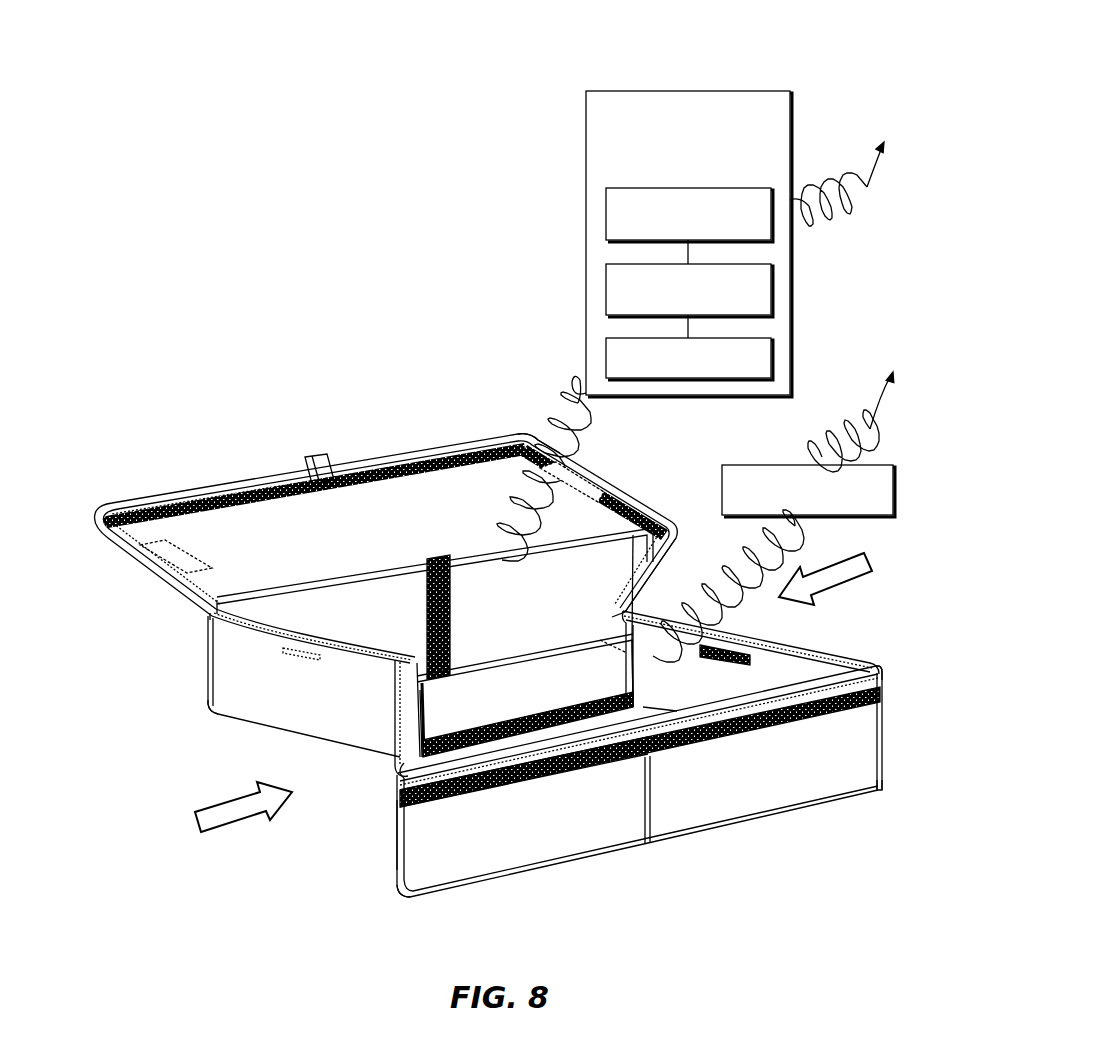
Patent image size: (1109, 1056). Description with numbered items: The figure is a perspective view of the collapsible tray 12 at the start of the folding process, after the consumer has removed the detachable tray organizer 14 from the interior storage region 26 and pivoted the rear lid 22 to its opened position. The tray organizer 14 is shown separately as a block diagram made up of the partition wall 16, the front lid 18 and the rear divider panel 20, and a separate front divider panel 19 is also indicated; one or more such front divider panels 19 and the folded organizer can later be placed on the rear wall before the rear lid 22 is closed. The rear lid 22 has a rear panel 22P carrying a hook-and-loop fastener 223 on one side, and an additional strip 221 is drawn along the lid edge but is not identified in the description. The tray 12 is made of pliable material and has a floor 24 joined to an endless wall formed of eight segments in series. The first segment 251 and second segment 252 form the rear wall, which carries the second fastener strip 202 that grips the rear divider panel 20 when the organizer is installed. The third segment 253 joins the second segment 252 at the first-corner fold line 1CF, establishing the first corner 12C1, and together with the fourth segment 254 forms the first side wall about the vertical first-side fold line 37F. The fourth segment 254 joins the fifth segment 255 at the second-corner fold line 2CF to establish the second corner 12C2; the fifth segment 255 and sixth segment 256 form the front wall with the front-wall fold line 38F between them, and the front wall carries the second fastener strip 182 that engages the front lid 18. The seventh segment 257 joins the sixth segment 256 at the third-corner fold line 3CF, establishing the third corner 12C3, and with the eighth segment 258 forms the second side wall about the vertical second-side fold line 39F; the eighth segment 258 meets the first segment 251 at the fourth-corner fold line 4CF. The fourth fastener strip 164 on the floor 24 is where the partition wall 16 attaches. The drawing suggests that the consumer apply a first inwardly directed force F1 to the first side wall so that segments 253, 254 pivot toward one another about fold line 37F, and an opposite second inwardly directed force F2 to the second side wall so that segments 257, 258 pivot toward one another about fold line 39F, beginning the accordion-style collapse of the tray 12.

The detachable tray organizer 14 is at (628, 92).
The rear divider panel 20 is at (606, 216).
The partition wall 16 is at (606, 290).
The front lid 18 is at (606, 360).
The front divider panel 19 is at (773, 465).
The rear lid 22 is at (409, 514).
The lid fastener strip 221 is at (150, 516).
The rear panel 22P is at (350, 520).
The hook-and-loop fastener 223 is at (570, 478).
The first-corner fold line 1CF is at (660, 520).
The second-corner fold line 2CF is at (882, 722).
The third-corner fold line 3CF is at (395, 845).
The fourth-corner fold line 4CF is at (212, 653).
The third segment 253 is at (663, 590).
The interior storage region 26 is at (448, 562).
The first segment 251 is at (337, 624).
The second segment 252 is at (543, 608).
The second fastener strip 202 is at (450, 600).
The tray 12 is at (496, 792).
The first corner 12C1 is at (208, 705).
The second corner 12C2 is at (882, 762).
The third corner 12C3 is at (395, 896).
The eighth segment 258 is at (281, 706).
The seventh segment 257 is at (410, 760).
The floor 24 is at (525, 695).
The second-side fold line 39F is at (423, 707).
The first-side fold line 37F is at (627, 683).
The fourth segment 254 is at (694, 692).
The fifth segment 255 is at (763, 757).
The sixth segment 256 is at (639, 781).
The front-wall fold line 38F is at (651, 812).
The fourth fastener strip 164 is at (478, 752).
The second fastener strip 182 is at (578, 768).
The first inwardly directed force F1 is at (838, 565).
The second inwardly directed force F2 is at (223, 800).